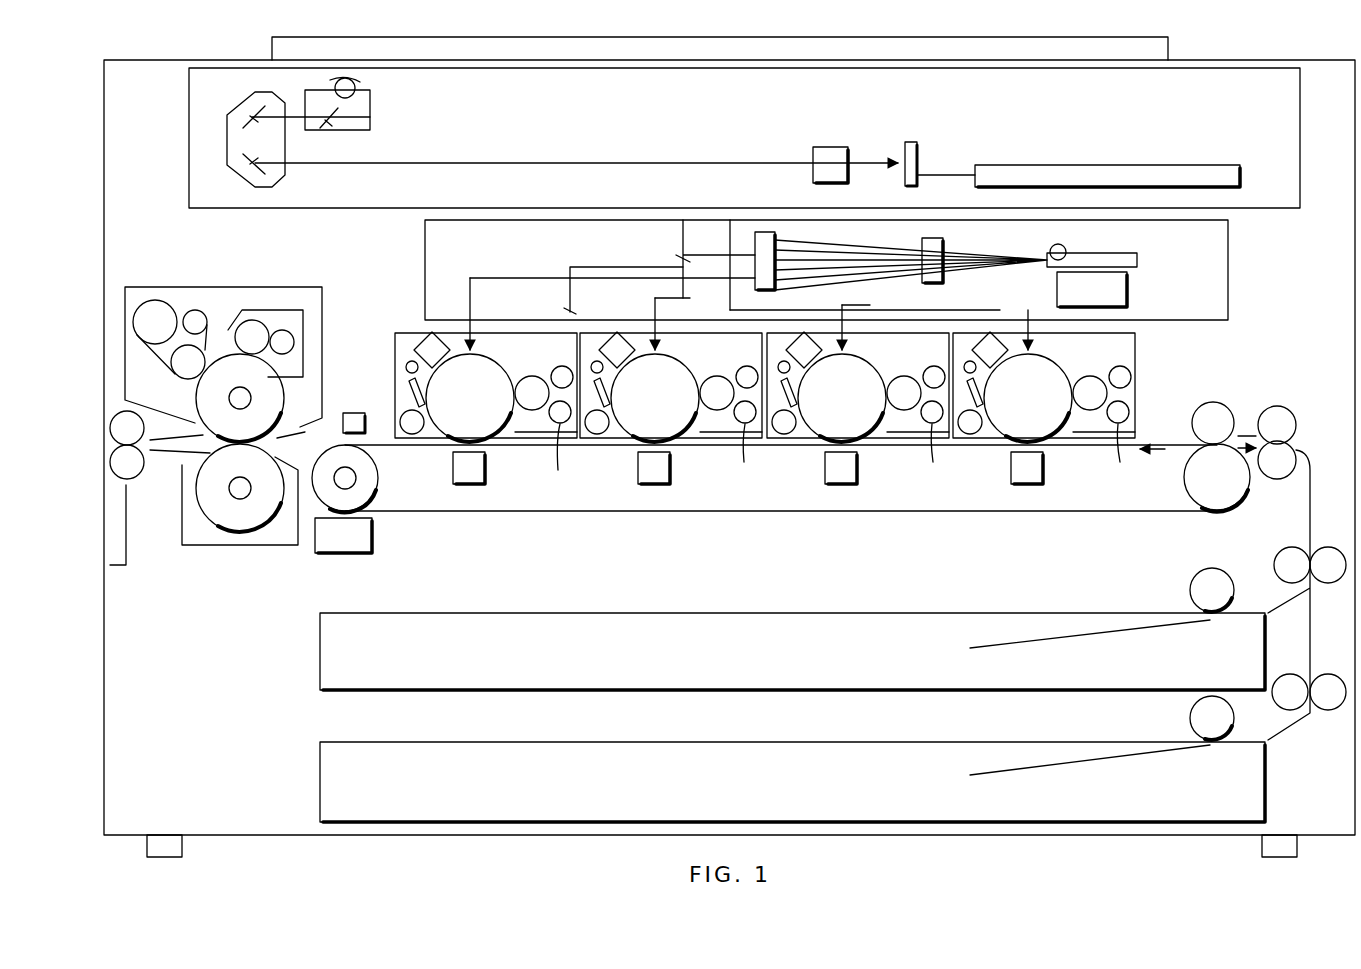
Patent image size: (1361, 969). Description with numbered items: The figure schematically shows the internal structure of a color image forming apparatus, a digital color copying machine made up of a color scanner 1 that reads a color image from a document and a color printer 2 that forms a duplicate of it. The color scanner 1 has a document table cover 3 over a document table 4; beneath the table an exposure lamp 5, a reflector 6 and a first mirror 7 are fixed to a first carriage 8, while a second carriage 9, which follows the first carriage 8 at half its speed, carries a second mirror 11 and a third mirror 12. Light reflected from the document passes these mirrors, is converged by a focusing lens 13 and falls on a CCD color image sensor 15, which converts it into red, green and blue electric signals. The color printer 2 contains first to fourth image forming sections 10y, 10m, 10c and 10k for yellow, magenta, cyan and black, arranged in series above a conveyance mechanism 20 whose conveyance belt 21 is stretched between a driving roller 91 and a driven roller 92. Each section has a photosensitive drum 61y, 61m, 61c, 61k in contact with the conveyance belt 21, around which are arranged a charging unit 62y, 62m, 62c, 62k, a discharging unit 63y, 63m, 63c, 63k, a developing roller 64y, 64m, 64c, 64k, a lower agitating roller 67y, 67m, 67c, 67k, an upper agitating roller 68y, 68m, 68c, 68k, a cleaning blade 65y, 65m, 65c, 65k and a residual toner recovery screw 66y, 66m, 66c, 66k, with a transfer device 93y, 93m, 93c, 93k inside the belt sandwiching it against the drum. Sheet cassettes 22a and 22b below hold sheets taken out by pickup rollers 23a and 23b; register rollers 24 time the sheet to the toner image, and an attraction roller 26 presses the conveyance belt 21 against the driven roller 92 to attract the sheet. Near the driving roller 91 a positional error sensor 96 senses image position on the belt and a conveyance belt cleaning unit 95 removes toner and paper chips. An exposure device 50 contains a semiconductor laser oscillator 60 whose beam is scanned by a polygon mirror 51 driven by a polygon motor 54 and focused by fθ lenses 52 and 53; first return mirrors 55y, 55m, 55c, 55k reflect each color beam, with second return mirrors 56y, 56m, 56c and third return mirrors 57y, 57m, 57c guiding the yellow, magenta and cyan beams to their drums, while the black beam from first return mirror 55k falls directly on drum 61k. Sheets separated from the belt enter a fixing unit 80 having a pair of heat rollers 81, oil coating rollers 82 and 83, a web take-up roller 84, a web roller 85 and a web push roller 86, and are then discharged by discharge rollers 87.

The color scanner 1 is at (605, 75).
The color printer 2 is at (766, 409).
The document table cover 3 is at (495, 48).
The document table 4 is at (548, 60).
The exposure lamp 5 is at (357, 85).
The reflector 6 is at (350, 120).
The first mirror 7 is at (330, 130).
The first carriage 8 is at (372, 100).
The second carriage 9 is at (283, 180).
The image forming section 10k is at (455, 423).
The image forming section 10c is at (669, 416).
The image forming section 10m is at (859, 418).
The image forming section 10y is at (1069, 414).
The second mirror 11 is at (252, 110).
The third mirror 12 is at (245, 175).
The focusing lens 13 is at (830, 147).
The CCD color image sensor 15 is at (911, 142).
The conveyance mechanism 20 is at (1100, 512).
The conveyance belt 21 is at (781, 482).
The sheet cassette 22a is at (318, 655).
The sheet cassette 22b is at (318, 780).
The pickup roller 23a is at (1190, 590).
The pickup roller 23b is at (1190, 718).
The register rollers 24 is at (1280, 406).
The attraction roller 26 is at (1218, 403).
The exposure device 50 is at (852, 266).
The polygon mirror 51 is at (1139, 260).
The fθ lens 52 is at (945, 245).
The fθ lens 53 is at (778, 245).
The polygon motor 54 is at (1129, 290).
The first return mirror 55k is at (470, 278).
The first return mirror 55c is at (568, 270).
The first return mirror 55m is at (700, 220).
The first return mirror 55y is at (735, 220).
The second return mirror 56c is at (570, 310).
The second return mirror 56m is at (683, 262).
The second return mirror 56y is at (733, 330).
The third return mirror 57c is at (655, 298).
The third return mirror 57m is at (845, 305).
The third return mirror 57y is at (1100, 310).
The semiconductor laser oscillator 60 is at (1064, 250).
The photosensitive drum 61k is at (480, 356).
The photosensitive drum 61c is at (675, 368).
The photosensitive drum 61m is at (862, 370).
The photosensitive drum 61y is at (1067, 365).
The charging unit 62k is at (420, 340).
The charging unit 62c is at (622, 338).
The charging unit 62m is at (818, 335).
The charging unit 62y is at (997, 335).
The discharging unit 63k is at (405, 365).
The discharging unit 63c is at (597, 358).
The discharging unit 63m is at (785, 358).
The discharging unit 63y is at (970, 358).
The developing roller 64k is at (525, 412).
The developing roller 64c is at (712, 412).
The developing roller 64m is at (900, 412).
The developing roller 64y is at (1090, 412).
The cleaning blade 65k is at (405, 388).
The cleaning blade 65c is at (600, 410).
The cleaning blade 65m is at (792, 410).
The cleaning blade 65y is at (975, 410).
The residual toner recovery screw 66k is at (400, 418).
The residual toner recovery screw 66c is at (597, 436).
The residual toner recovery screw 66m is at (784, 436).
The residual toner recovery screw 66y is at (972, 436).
The lower agitating roller 67k is at (558, 470).
The lower agitating roller 67c is at (745, 425).
The lower agitating roller 67m is at (932, 425).
The lower agitating roller 67y is at (1119, 425).
The upper agitating roller 68k is at (553, 372).
The upper agitating roller 68c is at (745, 425).
The upper agitating roller 68m is at (930, 370).
The upper agitating roller 68y is at (1132, 377).
The fixing unit 80 is at (248, 419).
The heat rollers 81 is at (240, 545).
The oil coating roller 82 is at (283, 330).
The oil coating roller 83 is at (252, 320).
The web take-up roller 84 is at (193, 310).
The web roller 85 is at (155, 300).
The web push roller 86 is at (172, 370).
The discharge rollers 87 is at (137, 478).
The driving roller 91 is at (372, 500).
The driven roller 92 is at (1190, 500).
The transfer device 93k is at (463, 486).
The transfer device 93c is at (650, 486).
The transfer device 93m is at (843, 486).
The transfer device 93y is at (1030, 486).
The conveyance belt cleaning unit 95 is at (350, 555).
The positional error sensor 96 is at (378, 450).